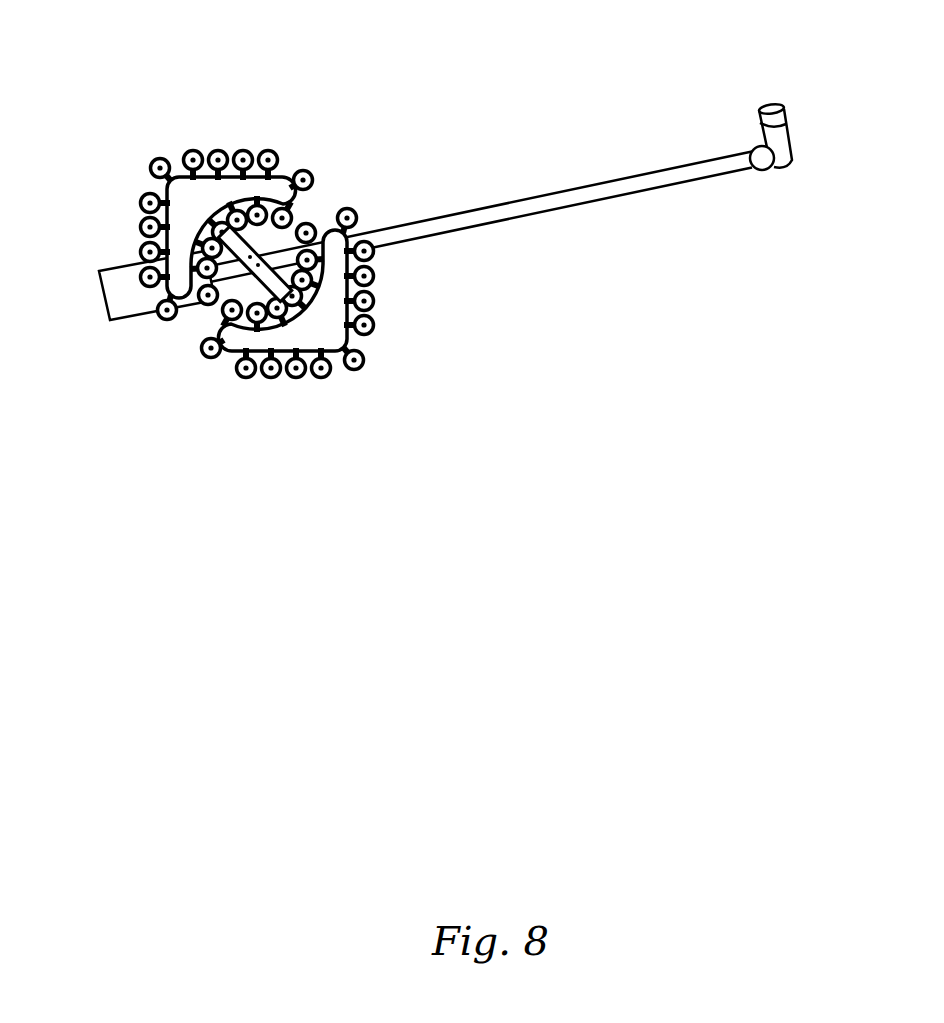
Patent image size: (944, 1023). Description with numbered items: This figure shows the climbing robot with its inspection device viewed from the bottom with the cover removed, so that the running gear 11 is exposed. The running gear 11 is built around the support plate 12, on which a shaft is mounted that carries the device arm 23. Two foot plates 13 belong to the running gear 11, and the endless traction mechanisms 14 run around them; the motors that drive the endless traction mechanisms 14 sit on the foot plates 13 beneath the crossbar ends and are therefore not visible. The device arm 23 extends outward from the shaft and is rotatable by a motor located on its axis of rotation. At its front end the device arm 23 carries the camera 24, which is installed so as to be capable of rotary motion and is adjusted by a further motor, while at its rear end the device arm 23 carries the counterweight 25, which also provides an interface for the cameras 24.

The running gear 11 is at (426, 299).
The support plate 12 is at (240, 250).
The foot plate 13 is at (193, 197).
The endless traction mechanism 14 is at (163, 193).
The device arm 23 is at (560, 202).
The camera 24 is at (765, 90).
The counterweight 25 is at (130, 297).